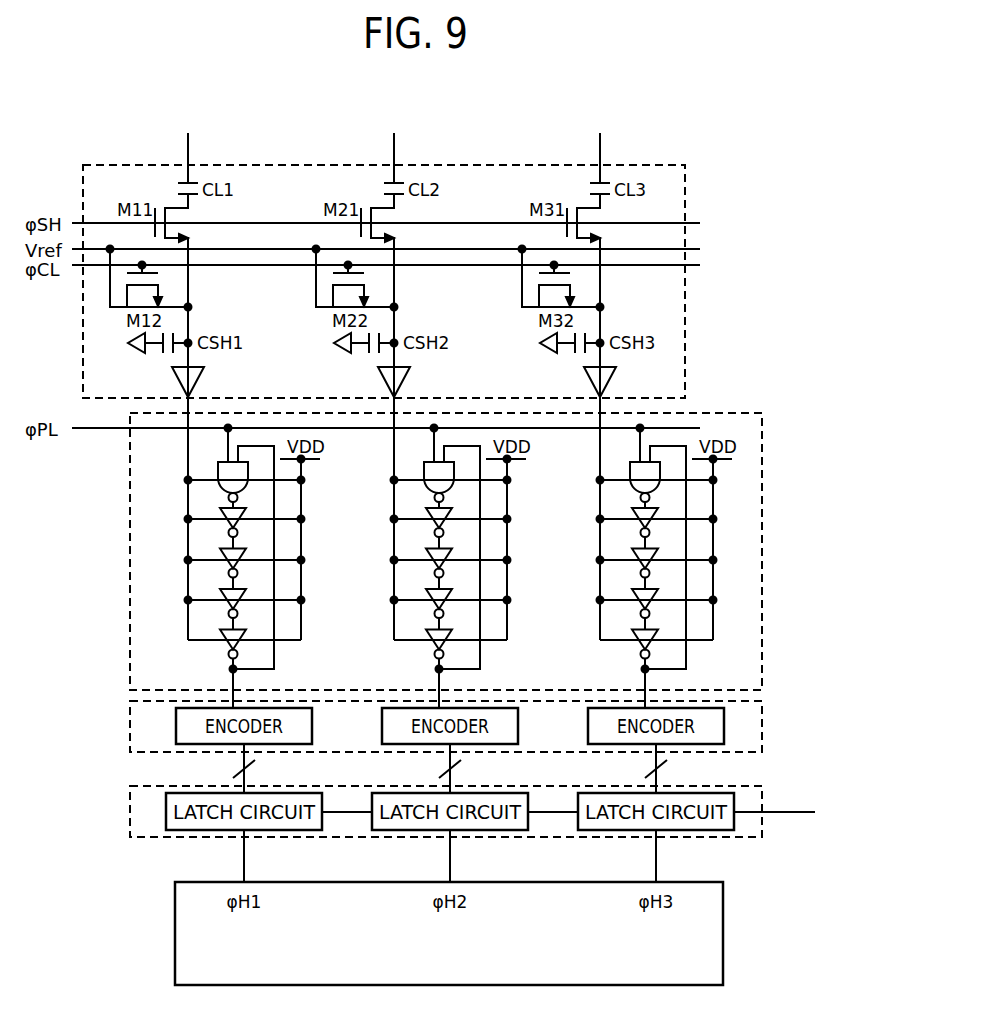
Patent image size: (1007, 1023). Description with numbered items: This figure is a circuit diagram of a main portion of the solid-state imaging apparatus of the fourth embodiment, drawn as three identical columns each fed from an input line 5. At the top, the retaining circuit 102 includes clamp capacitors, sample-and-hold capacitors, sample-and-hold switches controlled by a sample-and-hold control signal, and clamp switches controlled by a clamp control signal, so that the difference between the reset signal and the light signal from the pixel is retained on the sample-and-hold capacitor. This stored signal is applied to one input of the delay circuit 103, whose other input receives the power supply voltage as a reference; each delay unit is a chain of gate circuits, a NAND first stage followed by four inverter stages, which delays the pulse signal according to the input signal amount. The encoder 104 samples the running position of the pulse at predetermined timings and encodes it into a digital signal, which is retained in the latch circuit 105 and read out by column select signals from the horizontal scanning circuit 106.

The vertical signal line 5 is at (627, 140).
The retaining circuit 102 is at (685, 190).
The delay circuit 103 is at (762, 461).
The encoder 104 is at (762, 720).
The latch circuit 105 is at (762, 831).
The horizontal scanning circuit 106 is at (723, 929).